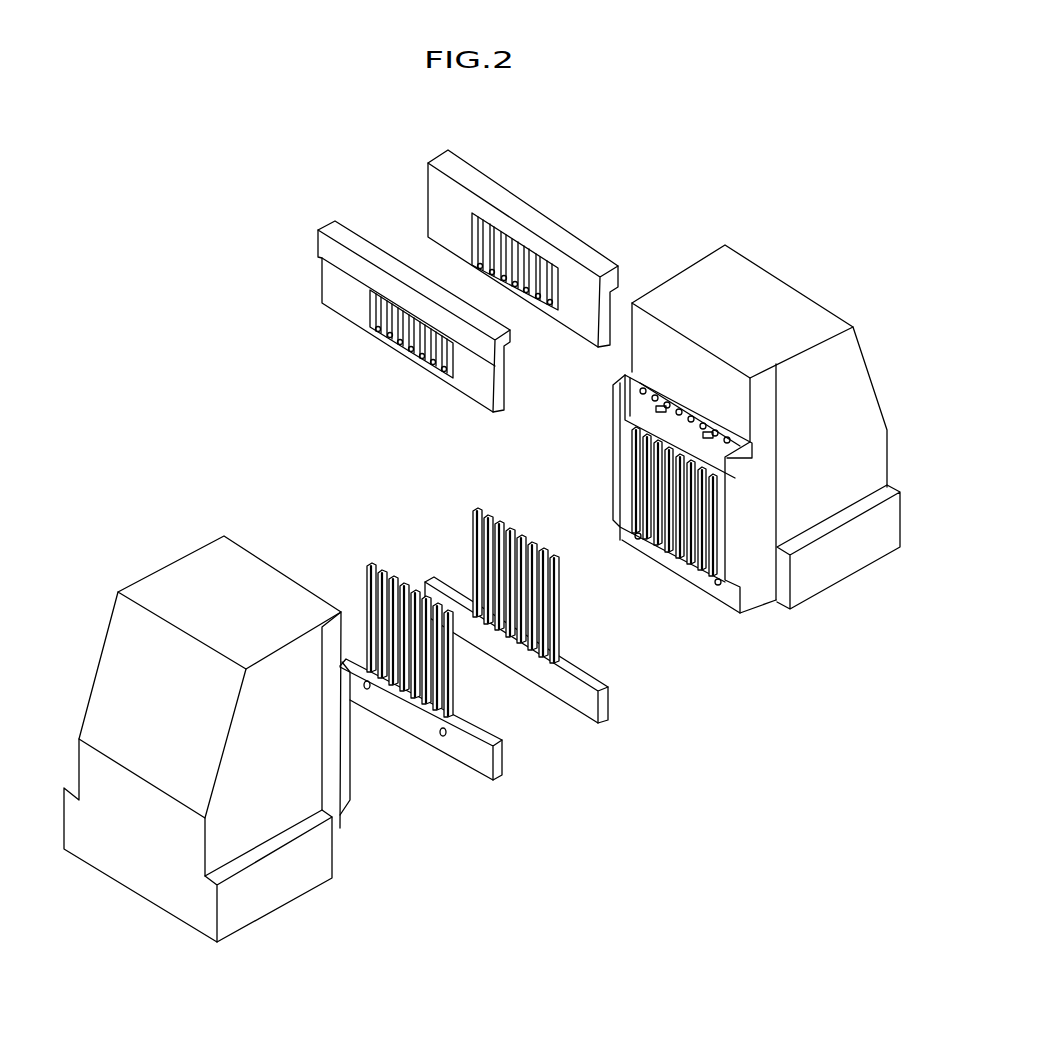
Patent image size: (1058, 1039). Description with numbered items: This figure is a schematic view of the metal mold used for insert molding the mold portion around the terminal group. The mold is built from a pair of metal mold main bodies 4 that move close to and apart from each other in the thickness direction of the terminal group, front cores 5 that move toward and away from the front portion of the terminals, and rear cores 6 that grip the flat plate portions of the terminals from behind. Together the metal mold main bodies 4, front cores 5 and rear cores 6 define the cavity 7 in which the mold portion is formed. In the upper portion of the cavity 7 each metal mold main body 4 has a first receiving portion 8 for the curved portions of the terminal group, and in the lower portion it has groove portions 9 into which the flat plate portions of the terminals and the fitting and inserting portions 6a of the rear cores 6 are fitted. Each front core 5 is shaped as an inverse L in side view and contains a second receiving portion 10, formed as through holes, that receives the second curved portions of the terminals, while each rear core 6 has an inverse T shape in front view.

The metal mold main body 4 is at (712, 265).
The front core 5 is at (425, 193).
The rear core 6 is at (498, 776).
The fitting and inserting portion 6a is at (560, 598).
The cavity 7 is at (632, 406).
The first receiving portion 8 is at (632, 365).
The groove portion 9 is at (632, 483).
The second receiving portion 10 is at (372, 305).